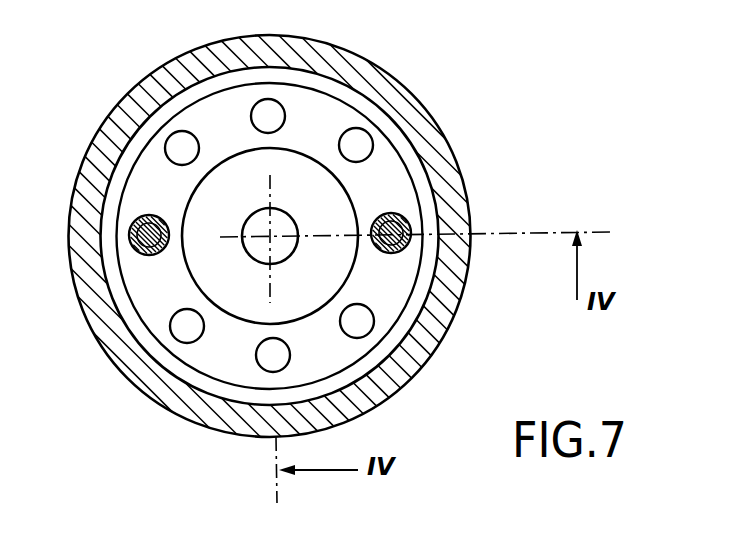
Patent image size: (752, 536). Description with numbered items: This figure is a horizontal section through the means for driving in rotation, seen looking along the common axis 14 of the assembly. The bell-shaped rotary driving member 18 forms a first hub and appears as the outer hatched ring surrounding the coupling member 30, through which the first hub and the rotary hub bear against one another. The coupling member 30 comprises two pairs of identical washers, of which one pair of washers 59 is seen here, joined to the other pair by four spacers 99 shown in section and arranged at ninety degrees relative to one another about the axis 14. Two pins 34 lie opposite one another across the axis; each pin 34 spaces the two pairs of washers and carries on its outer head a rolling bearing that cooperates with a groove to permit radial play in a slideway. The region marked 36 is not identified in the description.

The axis 14 is at (268, 240).
The rotary driving member 18 is at (363, 78).
The coupling member 30 is at (382, 173).
The pin 34 is at (140, 220).
The hub 36 is at (153, 295).
The washers 59 is at (312, 110).
The spacers 99 is at (357, 144).